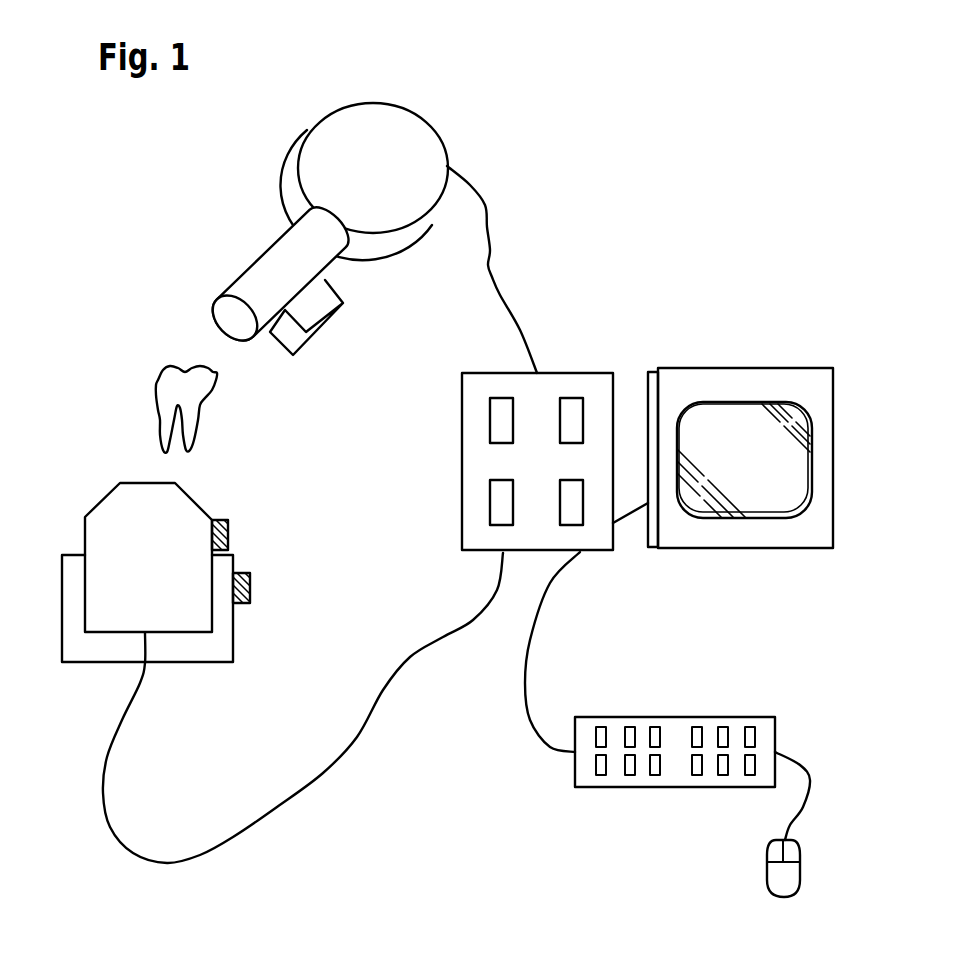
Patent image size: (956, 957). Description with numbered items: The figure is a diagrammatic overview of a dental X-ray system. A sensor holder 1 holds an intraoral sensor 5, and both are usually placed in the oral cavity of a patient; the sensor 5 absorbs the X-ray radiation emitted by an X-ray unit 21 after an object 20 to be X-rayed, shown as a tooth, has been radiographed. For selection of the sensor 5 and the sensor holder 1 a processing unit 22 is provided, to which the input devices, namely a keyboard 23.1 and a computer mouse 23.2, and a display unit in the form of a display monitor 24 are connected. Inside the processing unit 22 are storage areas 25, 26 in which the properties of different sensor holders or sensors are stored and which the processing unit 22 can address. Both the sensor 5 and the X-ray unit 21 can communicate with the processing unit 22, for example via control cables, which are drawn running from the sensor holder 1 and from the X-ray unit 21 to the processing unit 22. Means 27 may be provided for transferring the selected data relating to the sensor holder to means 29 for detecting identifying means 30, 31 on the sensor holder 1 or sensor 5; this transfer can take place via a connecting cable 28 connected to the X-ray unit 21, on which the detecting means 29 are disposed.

The sensor holder 1 is at (167, 557).
The intraoral sensor 5 is at (123, 508).
The object to be X-rayed 20 is at (175, 383).
The X-ray unit 21 is at (326, 229).
The processing unit 22 is at (515, 469).
The keyboard 23.1 is at (682, 763).
The computer mouse 23.2 is at (787, 880).
The display monitor 24 is at (752, 430).
The storage area 25 is at (503, 503).
The storage area 26 is at (573, 417).
The means for transferring selected data 27 is at (503, 425).
The connecting cable 28 is at (492, 233).
The detecting means 29 is at (315, 304).
The identifying means 30 is at (252, 588).
The identifying means 31 is at (228, 530).